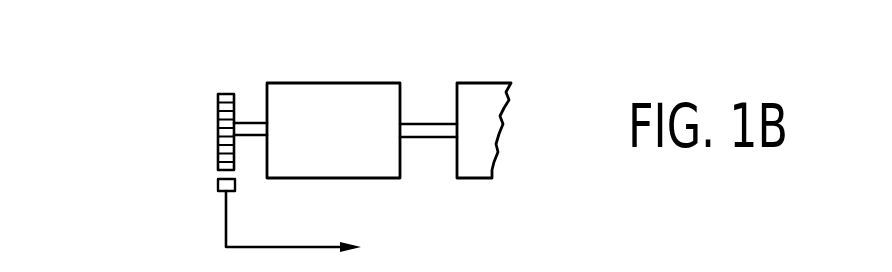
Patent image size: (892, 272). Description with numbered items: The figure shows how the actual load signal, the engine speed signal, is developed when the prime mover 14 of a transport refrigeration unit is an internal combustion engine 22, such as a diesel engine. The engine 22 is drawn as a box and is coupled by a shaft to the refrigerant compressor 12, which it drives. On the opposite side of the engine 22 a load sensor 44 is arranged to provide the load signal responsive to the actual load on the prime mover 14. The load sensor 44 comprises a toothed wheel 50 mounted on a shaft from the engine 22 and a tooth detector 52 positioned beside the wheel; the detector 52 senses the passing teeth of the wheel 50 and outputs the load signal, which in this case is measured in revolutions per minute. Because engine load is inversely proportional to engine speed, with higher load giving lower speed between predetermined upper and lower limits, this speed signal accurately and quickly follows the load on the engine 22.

The refrigerant compressor 12 is at (510, 82).
The prime mover 14 is at (326, 71).
The internal combustion engine 22 is at (400, 83).
The load sensor 44 is at (188, 116).
The toothed wheel 50 is at (228, 94).
The tooth detector 52 is at (218, 184).